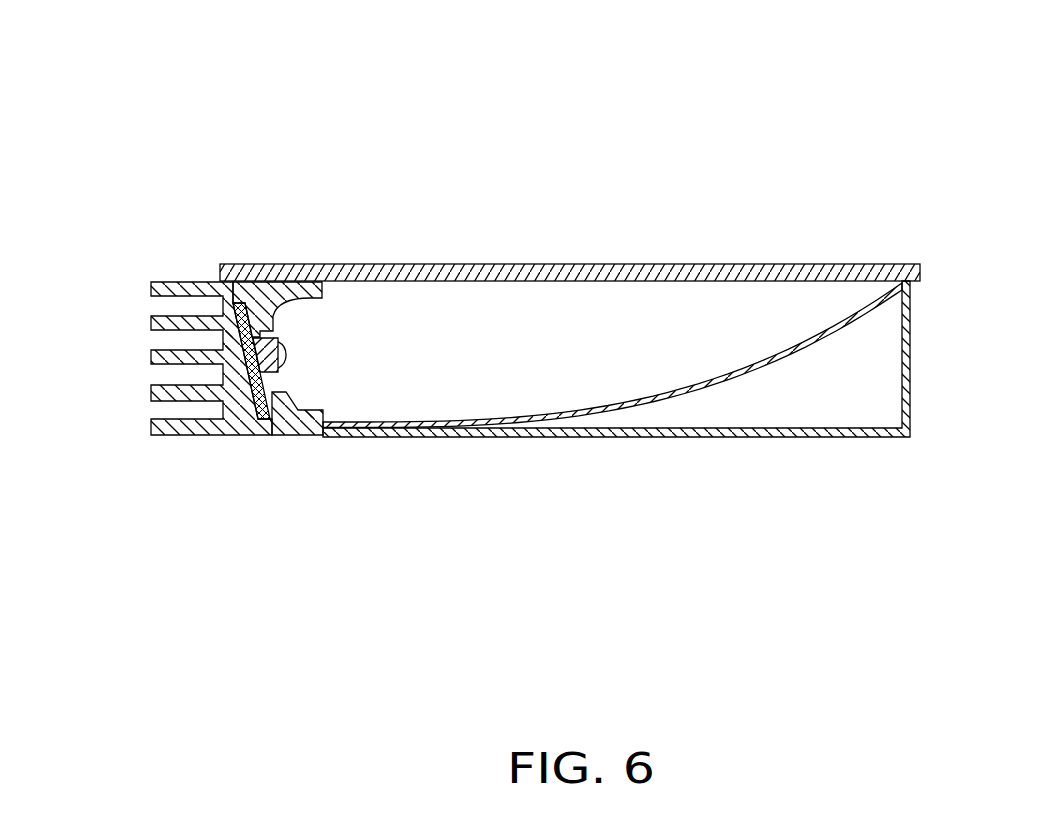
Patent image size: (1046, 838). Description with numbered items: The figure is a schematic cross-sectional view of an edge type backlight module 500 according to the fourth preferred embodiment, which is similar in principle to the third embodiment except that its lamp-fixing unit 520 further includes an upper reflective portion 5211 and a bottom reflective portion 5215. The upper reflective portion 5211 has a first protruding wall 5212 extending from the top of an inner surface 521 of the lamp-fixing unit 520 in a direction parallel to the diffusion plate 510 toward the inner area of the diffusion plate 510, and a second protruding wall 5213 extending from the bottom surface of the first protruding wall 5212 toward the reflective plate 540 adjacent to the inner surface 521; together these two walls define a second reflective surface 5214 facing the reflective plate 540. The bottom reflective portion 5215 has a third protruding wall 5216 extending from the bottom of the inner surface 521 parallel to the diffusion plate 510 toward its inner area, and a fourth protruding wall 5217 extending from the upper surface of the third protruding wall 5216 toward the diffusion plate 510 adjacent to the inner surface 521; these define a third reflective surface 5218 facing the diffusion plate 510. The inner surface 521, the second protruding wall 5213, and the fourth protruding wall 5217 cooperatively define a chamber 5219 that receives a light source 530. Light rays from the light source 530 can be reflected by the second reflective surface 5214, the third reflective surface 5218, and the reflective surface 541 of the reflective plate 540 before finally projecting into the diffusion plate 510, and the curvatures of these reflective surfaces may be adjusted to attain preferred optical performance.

The backlight module 500 is at (583, 52).
The diffusion plate 510 is at (711, 274).
The lamp-fixing unit 520 is at (180, 438).
The inner surface 521 is at (272, 410).
The light source 530 is at (288, 357).
The reflective plate 540 is at (843, 332).
The reflective surface 541 is at (797, 345).
The upper reflective portion 5211 is at (294, 244).
The first protruding wall 5212 is at (290, 290).
The second protruding wall 5213 is at (252, 273).
The second reflective surface 5214 is at (336, 265).
The bottom reflective portion 5215 is at (383, 470).
The third protruding wall 5216 is at (304, 465).
The fourth protruding wall 5217 is at (285, 396).
The third reflective surface 5218 is at (312, 410).
The chamber 5219 is at (240, 336).